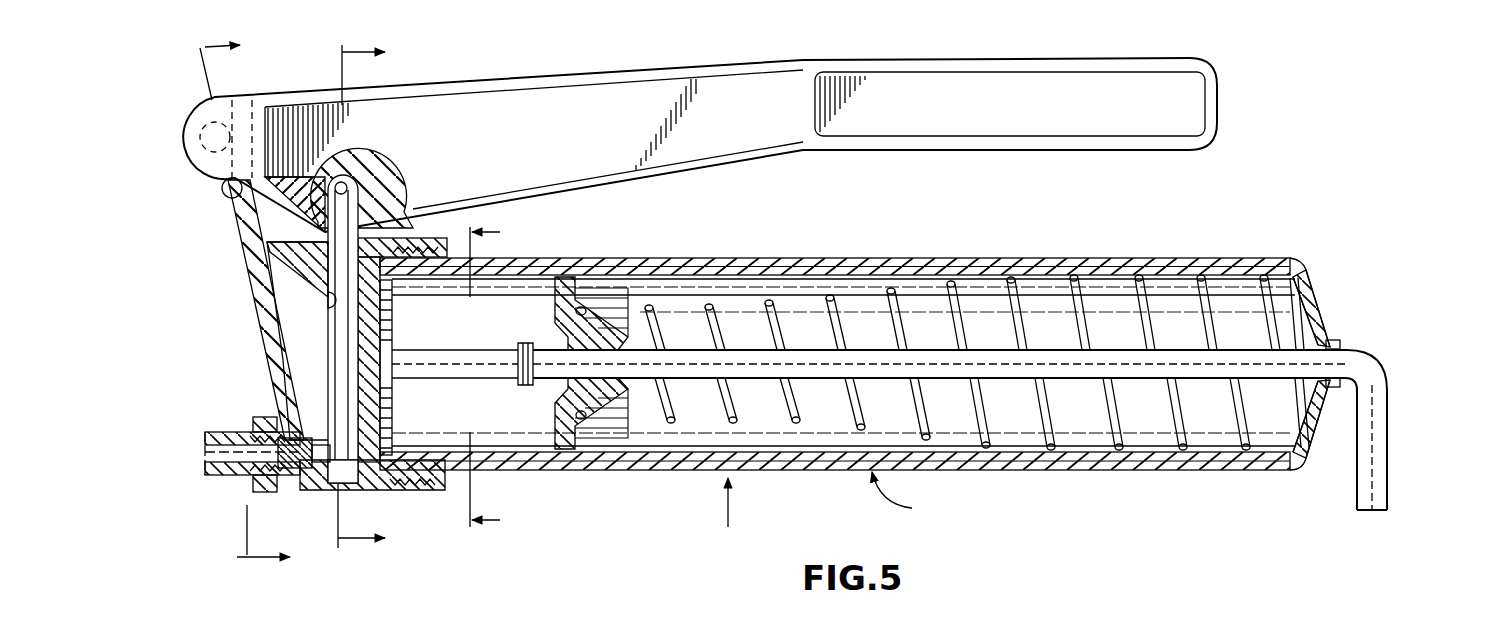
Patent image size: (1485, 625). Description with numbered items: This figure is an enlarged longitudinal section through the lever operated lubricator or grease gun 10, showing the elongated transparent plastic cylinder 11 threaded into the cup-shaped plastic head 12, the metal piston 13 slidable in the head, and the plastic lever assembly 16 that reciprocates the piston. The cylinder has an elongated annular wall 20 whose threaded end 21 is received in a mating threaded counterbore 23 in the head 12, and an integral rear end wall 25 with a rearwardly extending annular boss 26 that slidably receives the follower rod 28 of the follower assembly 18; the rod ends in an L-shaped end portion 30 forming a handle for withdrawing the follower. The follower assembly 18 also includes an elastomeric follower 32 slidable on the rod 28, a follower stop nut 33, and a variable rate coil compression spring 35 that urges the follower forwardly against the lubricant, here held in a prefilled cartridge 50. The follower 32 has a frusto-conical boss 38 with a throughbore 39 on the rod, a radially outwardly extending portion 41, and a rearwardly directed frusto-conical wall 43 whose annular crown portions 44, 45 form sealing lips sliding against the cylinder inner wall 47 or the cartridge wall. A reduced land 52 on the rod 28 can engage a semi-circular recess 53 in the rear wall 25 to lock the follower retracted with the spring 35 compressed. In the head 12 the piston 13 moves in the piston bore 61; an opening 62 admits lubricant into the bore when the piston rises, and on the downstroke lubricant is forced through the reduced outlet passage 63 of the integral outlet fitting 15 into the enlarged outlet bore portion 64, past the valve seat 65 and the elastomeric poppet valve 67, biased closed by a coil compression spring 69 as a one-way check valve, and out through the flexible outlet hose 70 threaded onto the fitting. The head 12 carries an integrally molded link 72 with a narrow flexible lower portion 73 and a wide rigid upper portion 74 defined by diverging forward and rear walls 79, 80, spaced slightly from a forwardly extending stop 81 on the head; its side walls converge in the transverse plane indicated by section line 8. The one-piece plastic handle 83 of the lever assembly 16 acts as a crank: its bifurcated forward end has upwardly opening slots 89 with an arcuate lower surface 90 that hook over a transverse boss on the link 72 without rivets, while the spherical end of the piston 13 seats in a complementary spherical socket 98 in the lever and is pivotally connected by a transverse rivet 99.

The section line 8- 8 is at (231, 308).
The lever operated lubricator 10 is at (540, 298).
The cylinder 11 is at (706, 377).
The head 12 is at (358, 483).
The piston 13 is at (350, 310).
The outlet fitting 15 is at (253, 485).
The lever assembly 16 is at (178, 130).
The follower assembly 18 is at (656, 462).
The annular wall 20 is at (762, 258).
The threaded end 21 is at (428, 240).
The threaded counterbore 23 is at (430, 485).
The rear end wall 25 is at (1318, 305).
The annular boss 26 is at (1342, 340).
The follower rod 28 is at (925, 358).
The L-shaped end portion 30 is at (1390, 420).
The follower 32 is at (598, 277).
The follower stop nut 33 is at (390, 383).
The variable rate coil compression spring 35 is at (828, 298).
The frusto-conical boss 38 is at (650, 336).
The throughbore 39 is at (660, 384).
The radially outwardly extending portion 41 is at (562, 300).
The frusto-conical wall 43 is at (615, 288).
The annular crown portion 44 is at (566, 452).
The annular crown portion 45 is at (618, 452).
The cylinder inner wall 47 is at (788, 462).
The prefilled cartridge 50 is at (1070, 467).
The reduced land 52 is at (522, 386).
The semi-circular recess 53 is at (1336, 345).
The piston bore 61 is at (326, 300).
The opening 62 is at (394, 348).
The outlet passage 63 is at (318, 464).
The outlet bore portion 64 is at (278, 478).
The valve seat 65 is at (280, 428).
The poppet valve 67 is at (298, 470).
The coil compression spring 69 is at (270, 440).
The flexible outlet hose 70 is at (205, 470).
The link 72 is at (238, 250).
The lower portion 73 is at (285, 395).
The upper portion 74 is at (222, 200).
The forward wall 79 is at (247, 292).
The rear wall 80 is at (318, 348).
The stop 81 is at (302, 262).
The handle 83 is at (585, 63).
The slot 89 is at (236, 100).
The arcuate lower surface 90 is at (185, 147).
The spherical socket 98 is at (398, 185).
The transverse rivet 99 is at (346, 180).